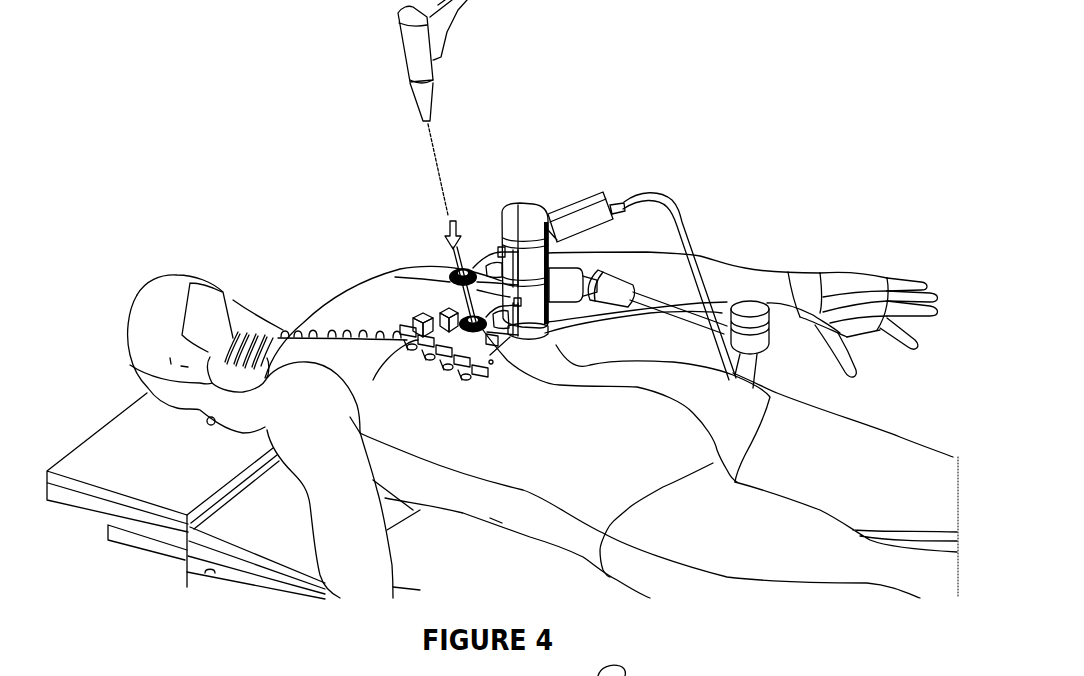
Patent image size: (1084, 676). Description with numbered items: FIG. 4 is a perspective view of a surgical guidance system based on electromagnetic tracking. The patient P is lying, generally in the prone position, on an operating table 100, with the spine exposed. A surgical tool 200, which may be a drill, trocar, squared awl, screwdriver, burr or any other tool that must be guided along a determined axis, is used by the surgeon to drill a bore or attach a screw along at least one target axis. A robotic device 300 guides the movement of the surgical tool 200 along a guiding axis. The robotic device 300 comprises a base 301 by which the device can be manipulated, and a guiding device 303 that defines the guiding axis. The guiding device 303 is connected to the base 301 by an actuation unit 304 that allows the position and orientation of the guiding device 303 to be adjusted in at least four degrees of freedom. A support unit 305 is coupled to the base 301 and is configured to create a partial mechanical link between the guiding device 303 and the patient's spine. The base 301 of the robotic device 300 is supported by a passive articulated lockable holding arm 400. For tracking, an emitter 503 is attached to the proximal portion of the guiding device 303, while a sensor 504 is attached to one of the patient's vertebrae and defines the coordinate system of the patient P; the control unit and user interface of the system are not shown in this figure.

The patient P is at (180, 253).
The operating table 100 is at (101, 511).
The surgical tool 200 is at (432, 90).
The robotic device 300 is at (652, 118).
The base 301 is at (533, 213).
The guiding device 303 is at (450, 264).
The actuation unit 304 is at (480, 236).
The support unit 305 is at (545, 340).
The passive articulated lockable holding arm 400 is at (663, 300).
The emitter 503 is at (440, 313).
The sensor 504 is at (415, 320).